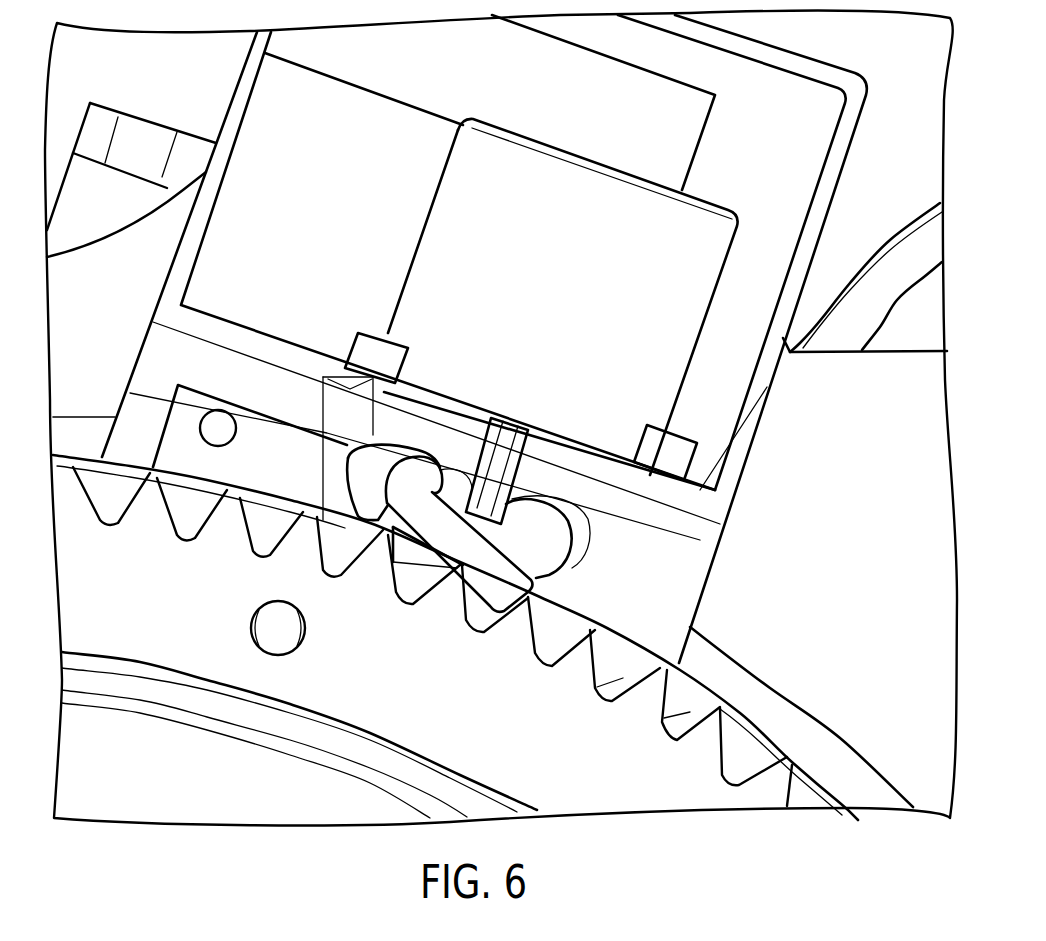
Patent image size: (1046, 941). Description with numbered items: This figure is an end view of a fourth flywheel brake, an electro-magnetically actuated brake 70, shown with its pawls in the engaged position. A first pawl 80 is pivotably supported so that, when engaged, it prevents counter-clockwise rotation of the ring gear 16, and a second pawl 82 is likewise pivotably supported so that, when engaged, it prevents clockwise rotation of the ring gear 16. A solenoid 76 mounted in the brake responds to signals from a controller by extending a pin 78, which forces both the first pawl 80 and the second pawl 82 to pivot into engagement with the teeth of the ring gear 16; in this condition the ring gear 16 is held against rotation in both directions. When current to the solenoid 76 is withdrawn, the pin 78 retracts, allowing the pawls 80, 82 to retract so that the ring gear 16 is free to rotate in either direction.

The ring gear 16 is at (673, 678).
The electro-magnetically actuated brake 70 is at (229, 107).
The solenoid 76 is at (413, 268).
The pin 78 is at (519, 465).
The first pawl 80 is at (352, 455).
The second pawl 82 is at (573, 545).